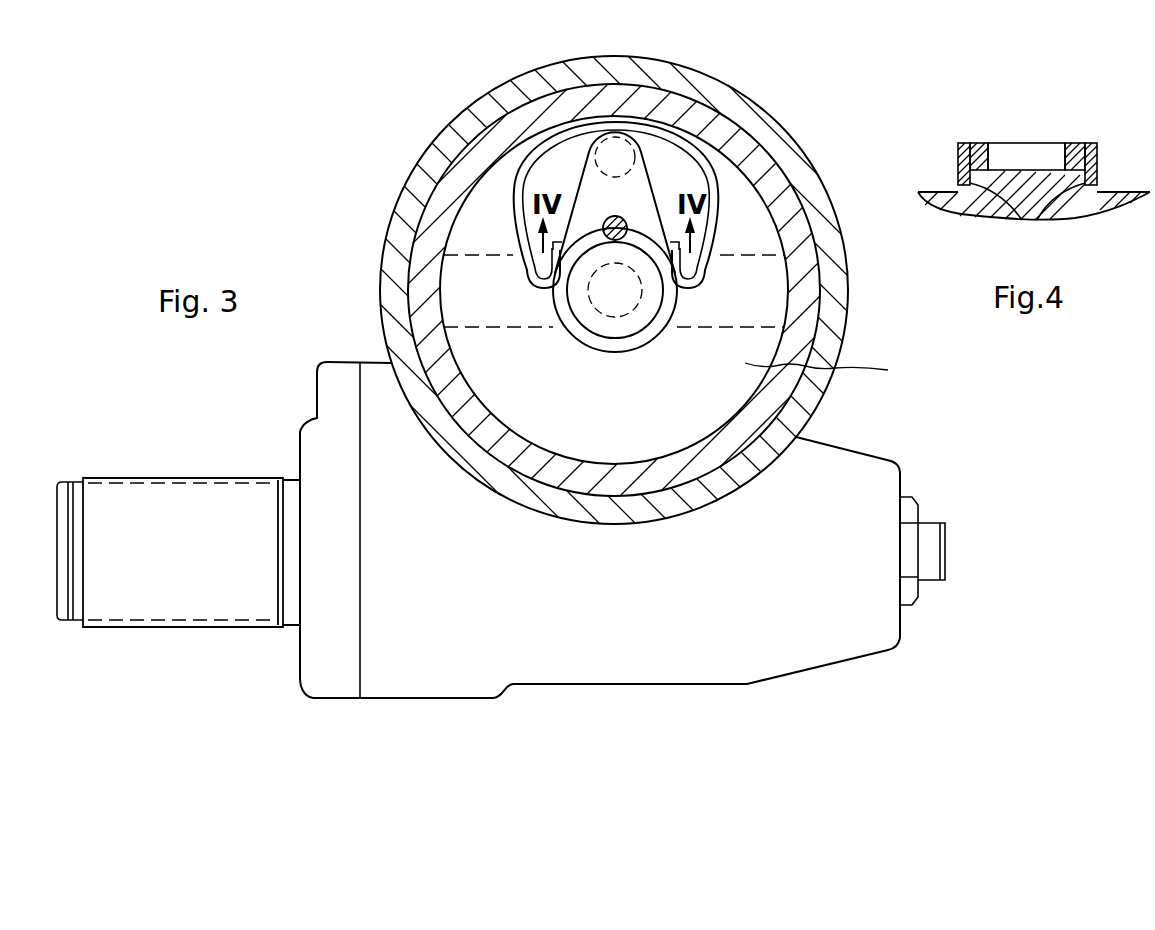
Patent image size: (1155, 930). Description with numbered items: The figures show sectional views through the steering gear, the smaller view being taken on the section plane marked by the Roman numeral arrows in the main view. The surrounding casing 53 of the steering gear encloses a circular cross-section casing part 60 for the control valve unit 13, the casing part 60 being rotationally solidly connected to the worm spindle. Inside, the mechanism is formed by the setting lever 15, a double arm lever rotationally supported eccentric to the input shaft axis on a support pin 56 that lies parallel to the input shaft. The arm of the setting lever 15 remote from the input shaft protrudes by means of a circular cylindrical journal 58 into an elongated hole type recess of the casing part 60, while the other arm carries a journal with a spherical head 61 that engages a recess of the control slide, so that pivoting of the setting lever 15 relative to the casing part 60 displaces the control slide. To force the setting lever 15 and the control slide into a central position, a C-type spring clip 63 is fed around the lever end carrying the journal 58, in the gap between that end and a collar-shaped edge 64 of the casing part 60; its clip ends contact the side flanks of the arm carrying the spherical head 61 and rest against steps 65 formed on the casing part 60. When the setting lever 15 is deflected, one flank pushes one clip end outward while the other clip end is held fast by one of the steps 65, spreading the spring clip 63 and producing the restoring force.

In FIG. 3, the control valve unit 13 is at (481, 306).
In FIG. 3, the setting lever 15 is at (598, 337).
In FIG. 4, the setting lever 15 is at (983, 143).
In FIG. 3, the casing 53 is at (735, 107).
In FIG. 3, the support pin 56 is at (621, 220).
In FIG. 3, the journal 58 is at (607, 173).
In FIG. 3, the casing part 60 is at (831, 369).
In FIG. 4, the casing part 60 is at (940, 192).
In FIG. 3, the journal with spherical head 61 is at (623, 312).
In FIG. 3, the C-type spring clip 63 is at (718, 233).
In FIG. 4, the C-type spring clip 63 is at (1100, 162).
In FIG. 3, the collar-shaped edge 64 is at (768, 163).
In FIG. 4, the steps 65 is at (1037, 220).